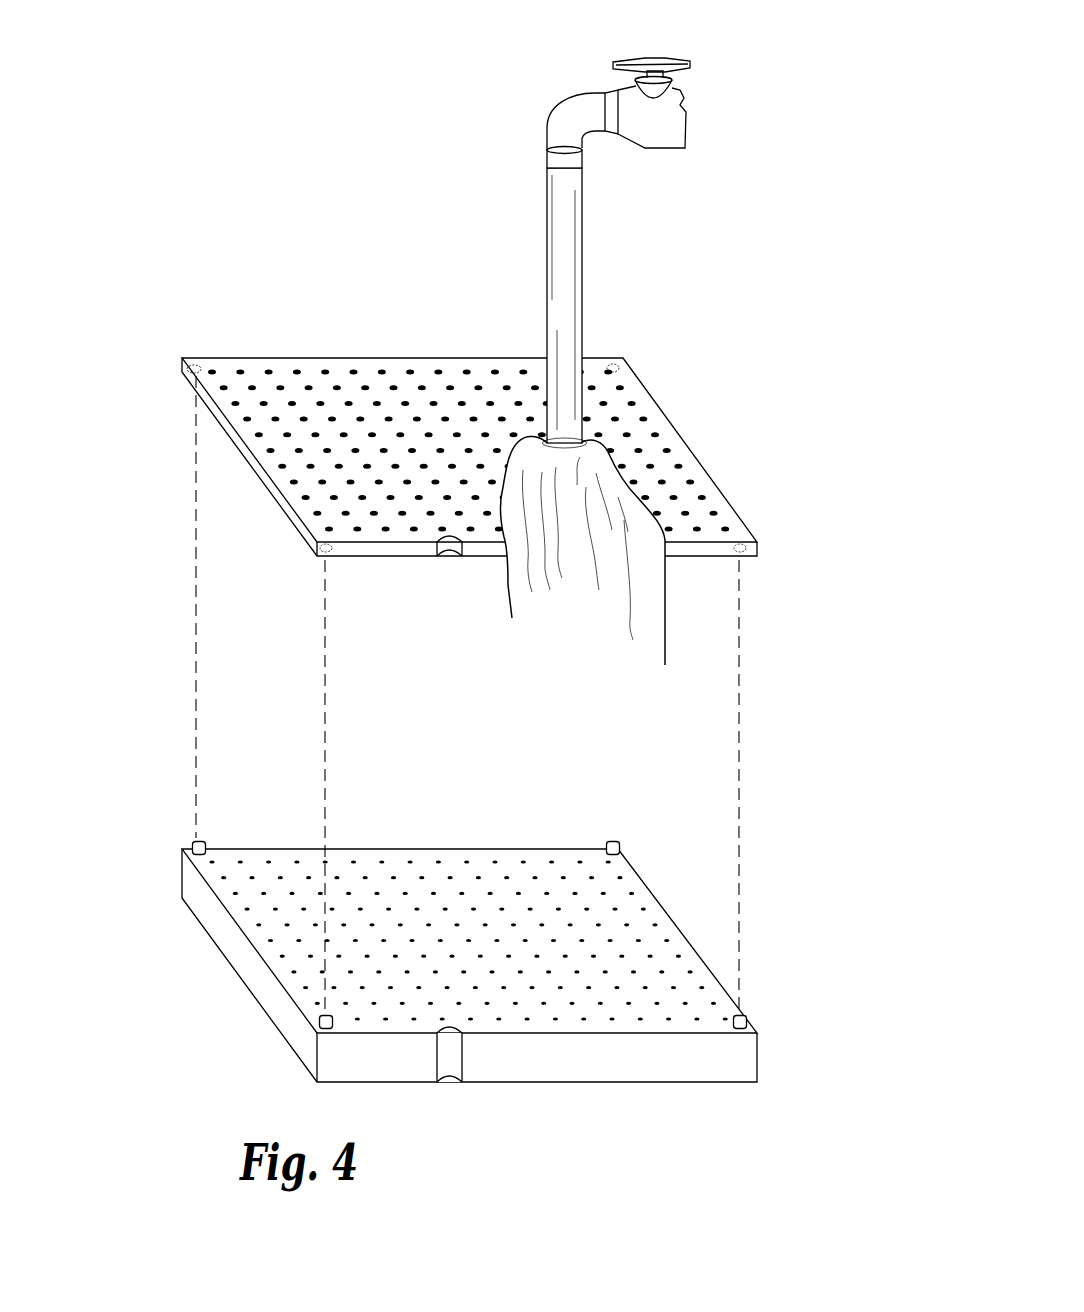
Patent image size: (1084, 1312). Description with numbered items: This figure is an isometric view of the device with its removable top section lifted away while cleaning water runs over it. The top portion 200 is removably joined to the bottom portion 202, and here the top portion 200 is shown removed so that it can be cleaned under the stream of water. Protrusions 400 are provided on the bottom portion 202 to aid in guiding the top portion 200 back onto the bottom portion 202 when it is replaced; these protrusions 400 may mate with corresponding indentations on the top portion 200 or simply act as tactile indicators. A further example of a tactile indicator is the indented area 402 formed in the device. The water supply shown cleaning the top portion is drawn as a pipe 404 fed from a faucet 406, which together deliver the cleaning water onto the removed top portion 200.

The top portion 200 is at (220, 340).
The bottom portion 202 is at (665, 897).
The protrusions 400 is at (190, 838).
The indented area 402 is at (452, 1085).
The water pipe 404 is at (595, 292).
The faucet 406 is at (697, 118).